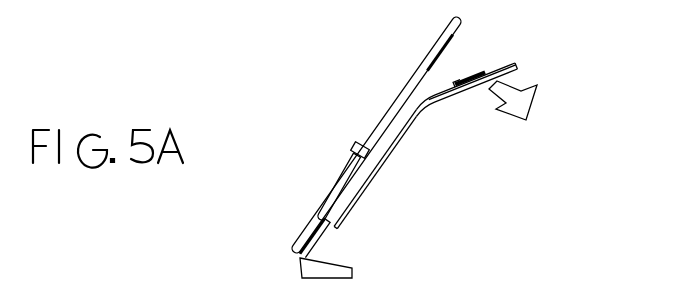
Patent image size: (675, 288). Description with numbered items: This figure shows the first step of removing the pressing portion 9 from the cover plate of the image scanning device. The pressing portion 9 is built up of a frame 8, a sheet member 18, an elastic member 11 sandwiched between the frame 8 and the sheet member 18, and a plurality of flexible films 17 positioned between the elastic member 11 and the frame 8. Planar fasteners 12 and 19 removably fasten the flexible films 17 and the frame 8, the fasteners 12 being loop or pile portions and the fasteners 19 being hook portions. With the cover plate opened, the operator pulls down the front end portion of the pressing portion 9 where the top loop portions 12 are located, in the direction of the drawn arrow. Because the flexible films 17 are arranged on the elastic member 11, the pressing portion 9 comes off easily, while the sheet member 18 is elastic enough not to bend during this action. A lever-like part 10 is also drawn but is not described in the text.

The frame 8 is at (401, 92).
The pressing portion 9 is at (374, 198).
The lever 10 is at (323, 248).
The elastic member 11 is at (400, 142).
The planar fasteners (loop portions) 12 is at (483, 62).
The flexible films 17 is at (519, 62).
The sheet member 18 is at (427, 107).
The planar fasteners (hook portions) 19 is at (462, 32).